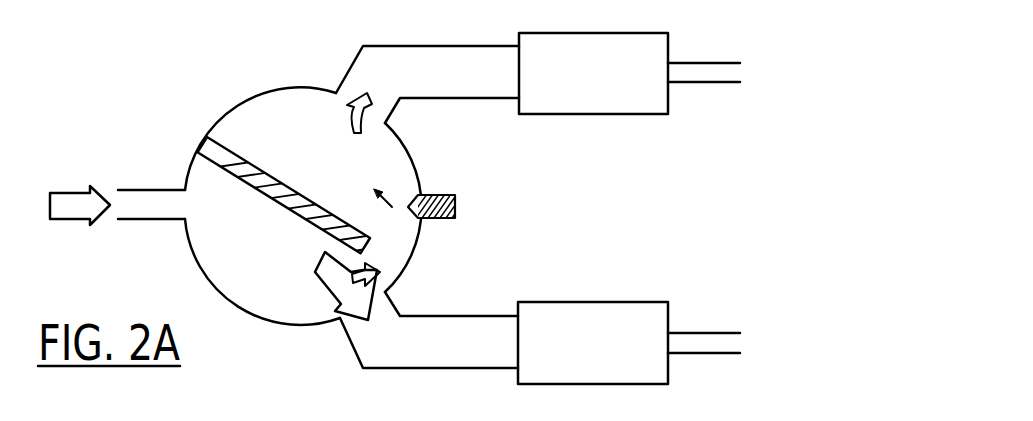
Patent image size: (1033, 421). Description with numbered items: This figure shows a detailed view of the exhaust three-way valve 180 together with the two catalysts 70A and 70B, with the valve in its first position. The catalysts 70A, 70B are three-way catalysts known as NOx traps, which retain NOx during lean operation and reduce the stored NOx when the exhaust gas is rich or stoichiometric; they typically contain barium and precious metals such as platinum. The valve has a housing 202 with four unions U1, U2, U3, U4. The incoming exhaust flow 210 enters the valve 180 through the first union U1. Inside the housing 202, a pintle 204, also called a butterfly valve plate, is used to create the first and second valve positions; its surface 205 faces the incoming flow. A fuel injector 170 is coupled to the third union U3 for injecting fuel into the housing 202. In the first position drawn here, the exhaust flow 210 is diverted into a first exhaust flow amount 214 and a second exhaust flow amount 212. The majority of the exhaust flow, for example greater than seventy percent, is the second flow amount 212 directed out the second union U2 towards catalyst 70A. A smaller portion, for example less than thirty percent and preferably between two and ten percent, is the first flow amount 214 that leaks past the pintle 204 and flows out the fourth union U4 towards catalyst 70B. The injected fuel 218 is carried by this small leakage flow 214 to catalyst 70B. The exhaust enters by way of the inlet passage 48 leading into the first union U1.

The exhaust three-way valve 180 is at (231, 340).
The housing 202 is at (212, 278).
The pintle 204 is at (248, 184).
The surface of diverter plate 205 is at (299, 210).
The exhaust flow 210 is at (70, 224).
The inlet passage 48 is at (140, 222).
The second exhaust flow amount 212 is at (362, 318).
The first exhaust flow amount 214 is at (361, 90).
The injected fuel 218 is at (374, 190).
The fuel injector 170 is at (455, 207).
The catalyst 70A is at (613, 301).
The catalyst 70B is at (650, 116).
The union U1 is at (176, 192).
The union U2 is at (337, 333).
The union U3 is at (420, 195).
The union U4 is at (345, 93).